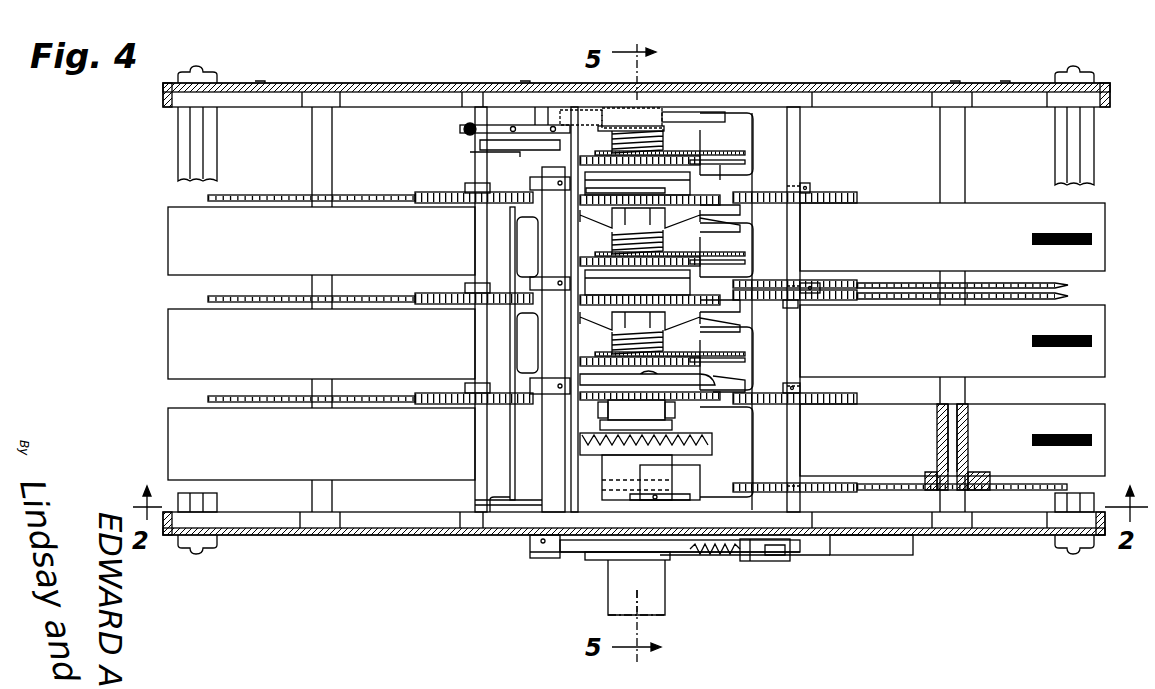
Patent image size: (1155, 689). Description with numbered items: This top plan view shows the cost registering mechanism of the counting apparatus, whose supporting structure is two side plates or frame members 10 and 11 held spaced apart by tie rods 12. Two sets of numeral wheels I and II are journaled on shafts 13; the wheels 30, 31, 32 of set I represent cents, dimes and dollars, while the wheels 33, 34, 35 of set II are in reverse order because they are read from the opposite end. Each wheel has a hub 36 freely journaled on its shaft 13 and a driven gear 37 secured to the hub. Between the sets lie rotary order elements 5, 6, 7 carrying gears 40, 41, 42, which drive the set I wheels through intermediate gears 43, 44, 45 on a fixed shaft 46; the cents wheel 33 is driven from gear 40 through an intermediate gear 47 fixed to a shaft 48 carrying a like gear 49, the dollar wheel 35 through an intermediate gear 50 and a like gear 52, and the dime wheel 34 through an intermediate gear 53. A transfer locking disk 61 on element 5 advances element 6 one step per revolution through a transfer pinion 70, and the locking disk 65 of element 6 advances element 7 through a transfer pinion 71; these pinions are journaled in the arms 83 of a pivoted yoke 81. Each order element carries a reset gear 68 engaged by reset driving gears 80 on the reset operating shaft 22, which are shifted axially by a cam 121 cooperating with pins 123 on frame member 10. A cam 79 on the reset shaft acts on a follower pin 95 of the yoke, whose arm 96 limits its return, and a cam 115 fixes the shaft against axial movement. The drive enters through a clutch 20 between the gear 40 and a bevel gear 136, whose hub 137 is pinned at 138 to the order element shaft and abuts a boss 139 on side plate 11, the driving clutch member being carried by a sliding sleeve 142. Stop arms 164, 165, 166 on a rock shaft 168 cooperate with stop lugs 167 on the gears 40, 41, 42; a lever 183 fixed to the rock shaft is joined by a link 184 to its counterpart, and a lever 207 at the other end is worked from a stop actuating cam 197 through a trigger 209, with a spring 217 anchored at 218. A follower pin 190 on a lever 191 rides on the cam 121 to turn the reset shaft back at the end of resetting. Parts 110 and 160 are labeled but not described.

The side plate 10 is at (760, 83).
The side plate 11 is at (402, 536).
The tie rods 12 is at (183, 135).
The shaft 13 is at (318, 536).
The hub 36 is at (970, 414).
The units-of-cents wheel 30 is at (168, 414).
The tens-of-cents wheel 31 is at (168, 362).
The dollar wheel 32 is at (168, 243).
The cents wheel 33 is at (1100, 214).
The dime wheel 34 is at (1100, 314).
The dollar wheel 35 is at (1100, 414).
The driven gear 37 is at (235, 194).
The set of numeral wheels I is at (158, 330).
The set of numeral wheels II is at (1114, 339).
The gear 40 is at (722, 396).
The gear 41 is at (598, 322).
The gear 42 is at (598, 222).
The intermediate gear 43 is at (504, 405).
The intermediate gear 44 is at (504, 304).
The intermediate gear 45 is at (458, 192).
The fixed shaft 46 is at (475, 498).
The intermediate gear 47 is at (766, 395).
The shaft 48 is at (800, 158).
The gear 49 is at (766, 280).
The intermediate gear 50 is at (828, 193).
The gear 52 is at (764, 484).
The intermediate gear 53 is at (812, 302).
The order element 5 is at (678, 339).
The order element 6 is at (678, 239).
The order element 7 is at (678, 137).
The transfer locking disk 61 is at (728, 318).
The locking disk 65 is at (720, 228).
The reset gear 68 is at (702, 158).
The transfer pinion 70 is at (748, 283).
The transfer pinion 71 is at (706, 198).
The cam 79 is at (602, 488).
The reset driving gear 80 is at (745, 152).
The yoke 81 is at (746, 463).
The yoke arms 83 is at (760, 190).
The follower pin 95 is at (624, 484).
The arm 96 is at (470, 535).
The hub 110 is at (646, 270).
The cam 115 is at (607, 580).
The cam 121 is at (670, 113).
The pins 123 is at (692, 110).
The bevel gear 136 is at (737, 433).
The hub 137 is at (668, 496).
The pin 138 is at (678, 498).
The boss 139 is at (585, 545).
The sleeve 142 is at (636, 415).
The bracket 160 is at (608, 413).
The stop arm 164 is at (660, 379).
The stop arm 165 is at (637, 282).
The stop arm 166 is at (637, 183).
The stop lug 167 is at (672, 190).
The rock shaft 168 is at (540, 527).
The lever 183 is at (468, 130).
The link 184 is at (480, 150).
The follower pin 190 is at (590, 108).
The lever 191 is at (492, 128).
The stop actuating cam 197 is at (690, 563).
The lever 207 is at (598, 562).
The trigger 209 is at (722, 553).
The spring 217 is at (836, 556).
The anchor 218 is at (900, 556).
The clutch 20 is at (702, 404).
The reset operating shaft 22 is at (665, 604).